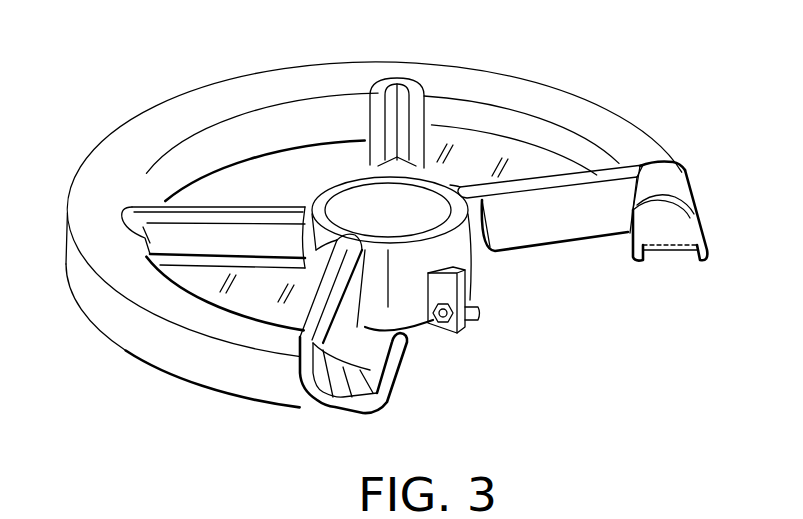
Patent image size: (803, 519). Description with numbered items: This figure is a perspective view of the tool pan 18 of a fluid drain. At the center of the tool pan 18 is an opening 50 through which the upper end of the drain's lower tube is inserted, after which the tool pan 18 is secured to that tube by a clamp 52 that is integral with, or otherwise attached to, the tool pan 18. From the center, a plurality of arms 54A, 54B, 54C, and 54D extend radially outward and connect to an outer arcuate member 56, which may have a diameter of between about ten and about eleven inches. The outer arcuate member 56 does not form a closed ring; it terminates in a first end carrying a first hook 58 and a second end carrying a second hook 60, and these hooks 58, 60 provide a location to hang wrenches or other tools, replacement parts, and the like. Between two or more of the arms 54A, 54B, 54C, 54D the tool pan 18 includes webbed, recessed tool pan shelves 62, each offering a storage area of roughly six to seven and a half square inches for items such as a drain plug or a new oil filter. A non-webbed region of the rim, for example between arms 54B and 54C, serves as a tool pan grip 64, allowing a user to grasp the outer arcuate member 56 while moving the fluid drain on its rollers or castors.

The tool pan 18 is at (152, 72).
The opening 50 is at (399, 218).
The clamp 52 is at (468, 332).
The arm 54A is at (562, 230).
The arm 54B is at (403, 107).
The arm 54C is at (178, 232).
The arm 54D is at (296, 300).
The outer arcuate member 56 is at (600, 118).
The first hook 58 is at (382, 402).
The second hook 60 is at (680, 217).
The tool pan shelf 62 is at (525, 125).
The tool pan grip 64 is at (283, 78).